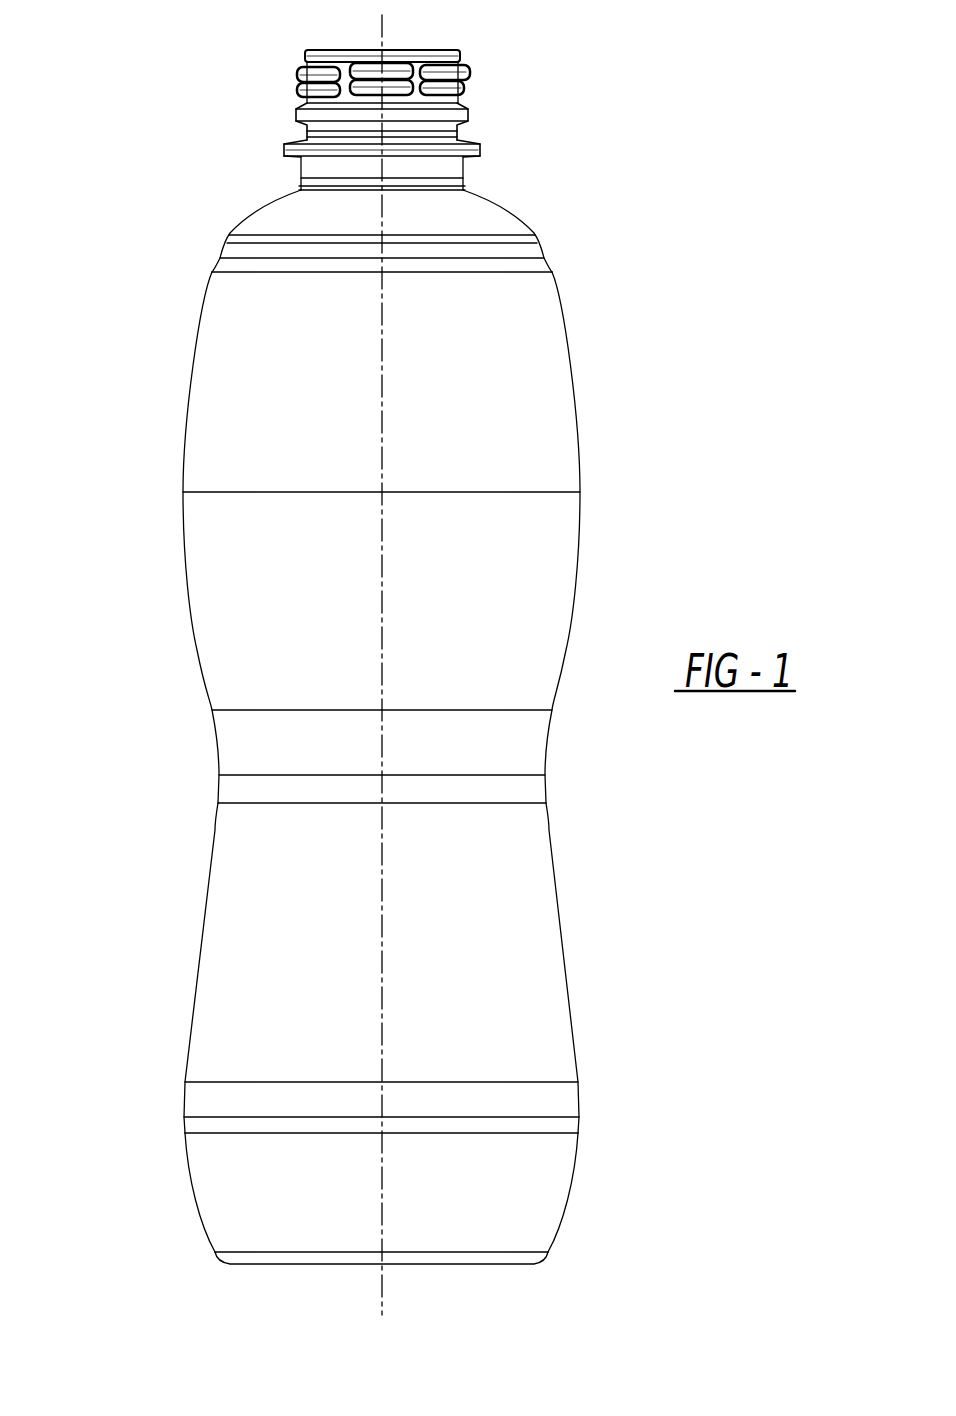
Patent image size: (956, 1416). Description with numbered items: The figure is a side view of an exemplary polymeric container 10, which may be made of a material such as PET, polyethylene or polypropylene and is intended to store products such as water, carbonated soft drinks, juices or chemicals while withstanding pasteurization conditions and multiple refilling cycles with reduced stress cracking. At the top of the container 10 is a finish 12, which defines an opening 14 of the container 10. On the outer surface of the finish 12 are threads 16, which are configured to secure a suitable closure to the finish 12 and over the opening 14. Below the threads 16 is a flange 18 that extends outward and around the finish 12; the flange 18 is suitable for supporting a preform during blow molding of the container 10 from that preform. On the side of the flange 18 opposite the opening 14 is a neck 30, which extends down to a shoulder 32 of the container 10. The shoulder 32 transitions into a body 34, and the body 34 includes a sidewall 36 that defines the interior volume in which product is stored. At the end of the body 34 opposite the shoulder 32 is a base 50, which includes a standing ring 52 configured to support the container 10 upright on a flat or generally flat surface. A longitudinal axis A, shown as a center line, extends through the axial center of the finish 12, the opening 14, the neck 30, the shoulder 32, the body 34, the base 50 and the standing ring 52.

The container 10 is at (128, 122).
The finish 12 is at (406, 70).
The opening 14 is at (340, 49).
The threads 16 is at (466, 68).
The flange 18 is at (290, 148).
The neck 30 is at (465, 173).
The shoulder 32 is at (512, 212).
The body 34 is at (578, 568).
The sidewall 36 is at (563, 970).
The base 50 is at (411, 1234).
The standing ring 52 is at (532, 1264).
The longitudinal axis A is at (382, 38).